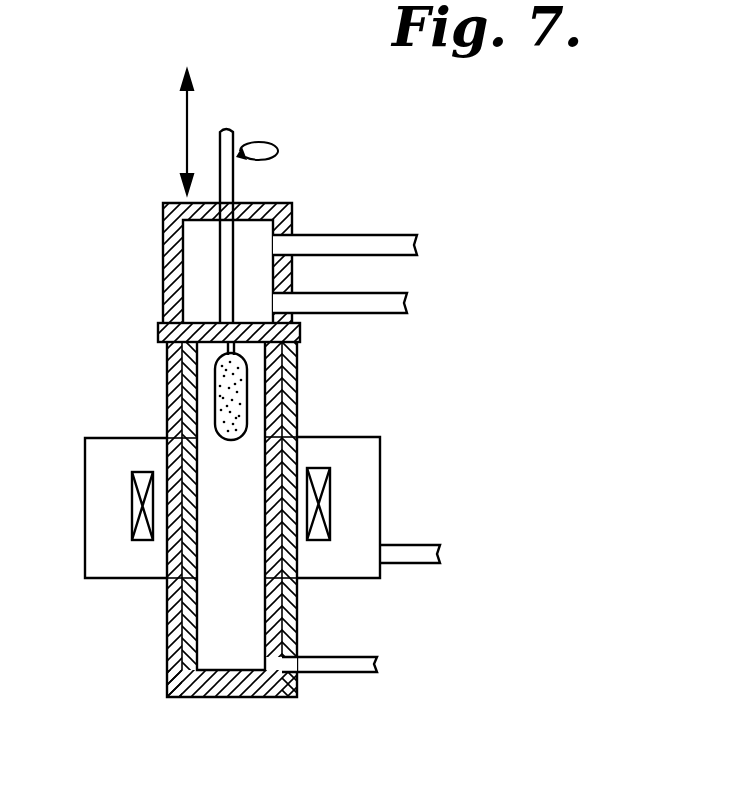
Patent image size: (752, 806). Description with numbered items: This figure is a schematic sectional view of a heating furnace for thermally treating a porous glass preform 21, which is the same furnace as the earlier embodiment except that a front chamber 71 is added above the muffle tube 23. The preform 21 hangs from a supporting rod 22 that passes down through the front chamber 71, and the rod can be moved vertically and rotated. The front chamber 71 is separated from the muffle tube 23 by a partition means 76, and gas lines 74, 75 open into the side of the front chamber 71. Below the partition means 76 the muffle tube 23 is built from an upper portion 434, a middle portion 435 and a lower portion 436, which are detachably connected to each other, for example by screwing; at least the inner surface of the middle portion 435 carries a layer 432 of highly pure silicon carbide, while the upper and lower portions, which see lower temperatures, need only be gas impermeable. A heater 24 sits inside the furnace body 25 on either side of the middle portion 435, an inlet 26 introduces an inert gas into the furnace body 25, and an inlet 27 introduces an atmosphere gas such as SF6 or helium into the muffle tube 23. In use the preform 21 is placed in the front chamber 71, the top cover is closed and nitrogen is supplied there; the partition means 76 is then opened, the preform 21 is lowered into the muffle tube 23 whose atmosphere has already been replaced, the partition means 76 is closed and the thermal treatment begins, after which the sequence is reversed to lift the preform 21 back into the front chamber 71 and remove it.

The porous glass preform 21 is at (248, 372).
The supporting rod 22 is at (238, 141).
The muffle tube 23 is at (297, 378).
The heater 24 is at (130, 507).
The furnace body 25 is at (380, 511).
The inlet for introducing an inert gas 26 is at (424, 565).
The inlet for introducing an atmosphere gas 27 is at (350, 672).
The front chamber 71 is at (253, 226).
The inlet tube 74 is at (384, 242).
The inlet tube 75 is at (390, 300).
The partition means 76 is at (162, 330).
The layer of highly pure silicon carbide 432 is at (192, 362).
The upper portion 434 is at (178, 403).
The middle portion 435 is at (178, 484).
The lower portion 436 is at (177, 636).